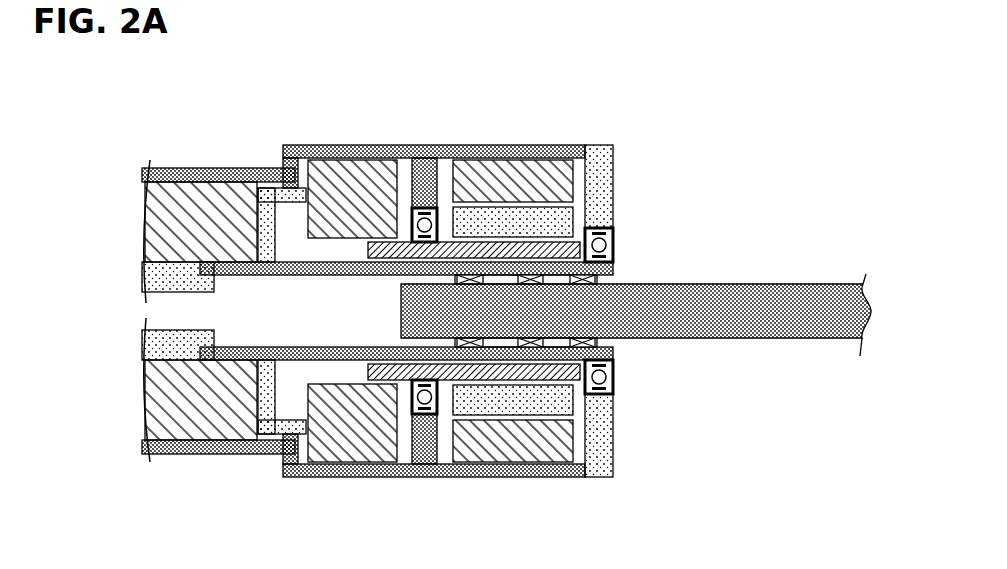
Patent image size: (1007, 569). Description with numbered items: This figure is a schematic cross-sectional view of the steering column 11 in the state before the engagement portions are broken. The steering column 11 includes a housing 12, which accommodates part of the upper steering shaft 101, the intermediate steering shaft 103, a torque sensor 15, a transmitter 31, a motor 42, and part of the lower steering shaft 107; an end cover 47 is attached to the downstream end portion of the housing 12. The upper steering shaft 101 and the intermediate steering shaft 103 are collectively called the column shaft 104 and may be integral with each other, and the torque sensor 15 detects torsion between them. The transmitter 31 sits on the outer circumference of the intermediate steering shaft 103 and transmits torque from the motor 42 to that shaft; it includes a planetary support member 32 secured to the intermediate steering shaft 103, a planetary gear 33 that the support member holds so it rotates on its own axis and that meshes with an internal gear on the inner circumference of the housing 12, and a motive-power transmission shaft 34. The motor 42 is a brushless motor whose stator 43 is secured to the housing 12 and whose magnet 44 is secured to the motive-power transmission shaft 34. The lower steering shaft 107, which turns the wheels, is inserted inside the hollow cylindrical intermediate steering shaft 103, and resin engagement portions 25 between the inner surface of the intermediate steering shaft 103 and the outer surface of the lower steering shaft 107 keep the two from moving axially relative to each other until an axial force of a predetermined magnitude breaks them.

The steering column 11 is at (483, 276).
The housing 12 is at (425, 165).
The torque sensor 15 is at (193, 398).
The engagement portions 25 is at (598, 347).
The transmitter 31 is at (419, 254).
The planetary support member 32 is at (290, 193).
The planetary gear 33 is at (353, 185).
The motive-power transmission shaft 34 is at (380, 246).
The motor 42 is at (530, 255).
The stator 43 is at (545, 185).
The magnet 44 is at (554, 222).
The end cover 47 is at (606, 177).
The upper steering shaft 101 is at (158, 276).
The intermediate steering shaft 103 is at (292, 270).
The column shaft 104 is at (354, 265).
The lower steering shaft 107 is at (823, 296).